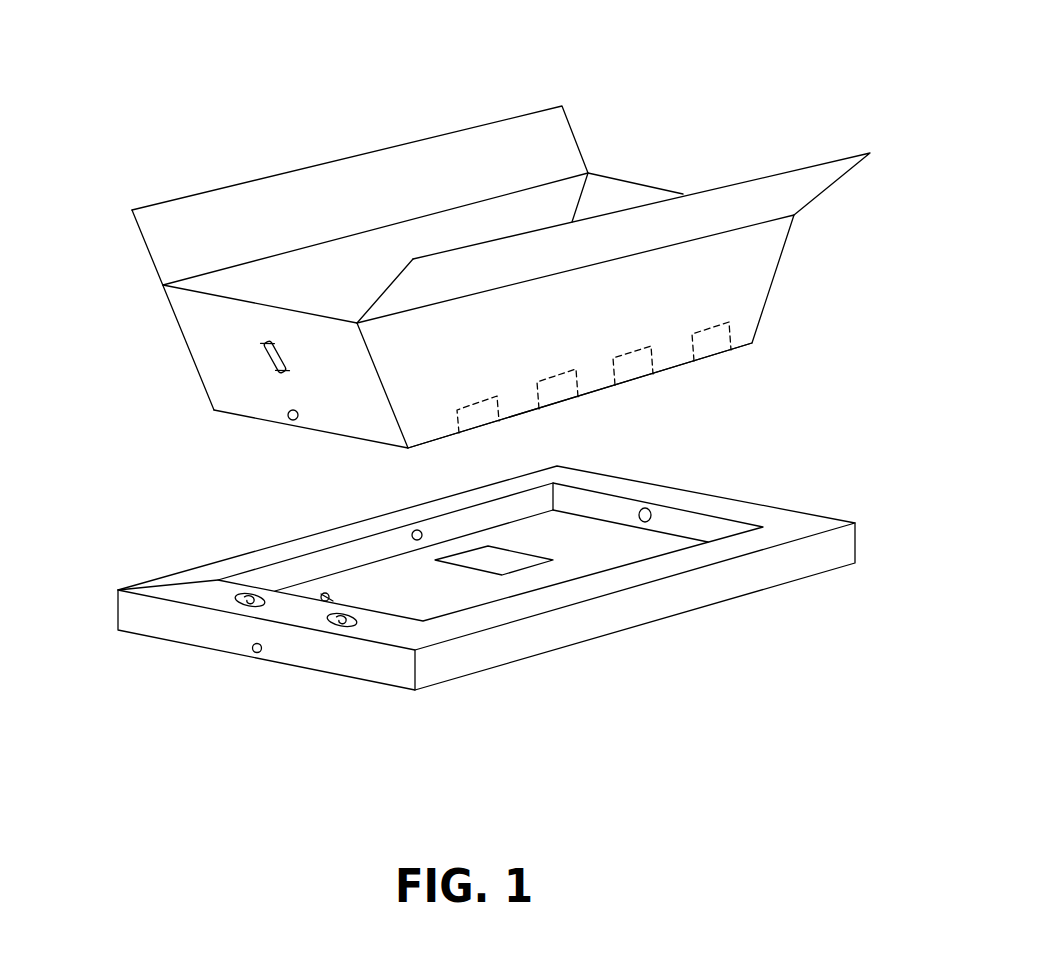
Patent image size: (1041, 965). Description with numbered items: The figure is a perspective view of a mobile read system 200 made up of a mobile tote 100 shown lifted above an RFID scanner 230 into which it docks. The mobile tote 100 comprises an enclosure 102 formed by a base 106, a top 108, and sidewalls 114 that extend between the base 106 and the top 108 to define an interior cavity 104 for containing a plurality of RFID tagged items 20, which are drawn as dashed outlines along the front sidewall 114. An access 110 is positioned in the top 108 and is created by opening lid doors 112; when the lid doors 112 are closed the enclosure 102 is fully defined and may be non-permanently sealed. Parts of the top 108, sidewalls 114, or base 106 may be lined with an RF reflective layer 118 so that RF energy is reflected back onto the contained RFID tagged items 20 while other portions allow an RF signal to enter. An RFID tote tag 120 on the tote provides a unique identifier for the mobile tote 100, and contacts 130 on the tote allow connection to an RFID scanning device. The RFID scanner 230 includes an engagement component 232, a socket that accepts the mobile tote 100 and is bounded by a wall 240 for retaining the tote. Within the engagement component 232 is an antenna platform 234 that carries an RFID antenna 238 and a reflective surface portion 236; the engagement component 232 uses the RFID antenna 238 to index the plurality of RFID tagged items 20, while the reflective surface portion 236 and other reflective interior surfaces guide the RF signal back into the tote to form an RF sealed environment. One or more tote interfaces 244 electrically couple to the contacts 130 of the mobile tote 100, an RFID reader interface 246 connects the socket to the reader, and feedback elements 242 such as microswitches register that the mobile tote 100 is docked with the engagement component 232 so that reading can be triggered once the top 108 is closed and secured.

The mobile tote 100 is at (275, 105).
The enclosure 102 is at (640, 178).
The interior cavity 104 is at (247, 283).
The base 106 is at (323, 433).
The top 108 is at (492, 122).
The access 110 is at (600, 162).
The lid doors 112 is at (402, 197).
The sidewalls 114 is at (611, 319).
The RF reflective layer 118 is at (362, 288).
The RFID tote tag 120 is at (268, 348).
The contacts 130 is at (288, 418).
The RFID tagged items 20 is at (478, 417).
The mobile read system 200 is at (800, 350).
The RFID scanner 230 is at (820, 505).
The engagement component 232 is at (660, 483).
The antenna platform 234 is at (643, 553).
The reflective surface portion 236 is at (610, 553).
The RFID antenna 238 is at (503, 567).
The wall 240 is at (343, 557).
The feedback elements 242 is at (243, 597).
The tote interfaces 244 is at (417, 535).
The RFID reader interface 246 is at (256, 648).